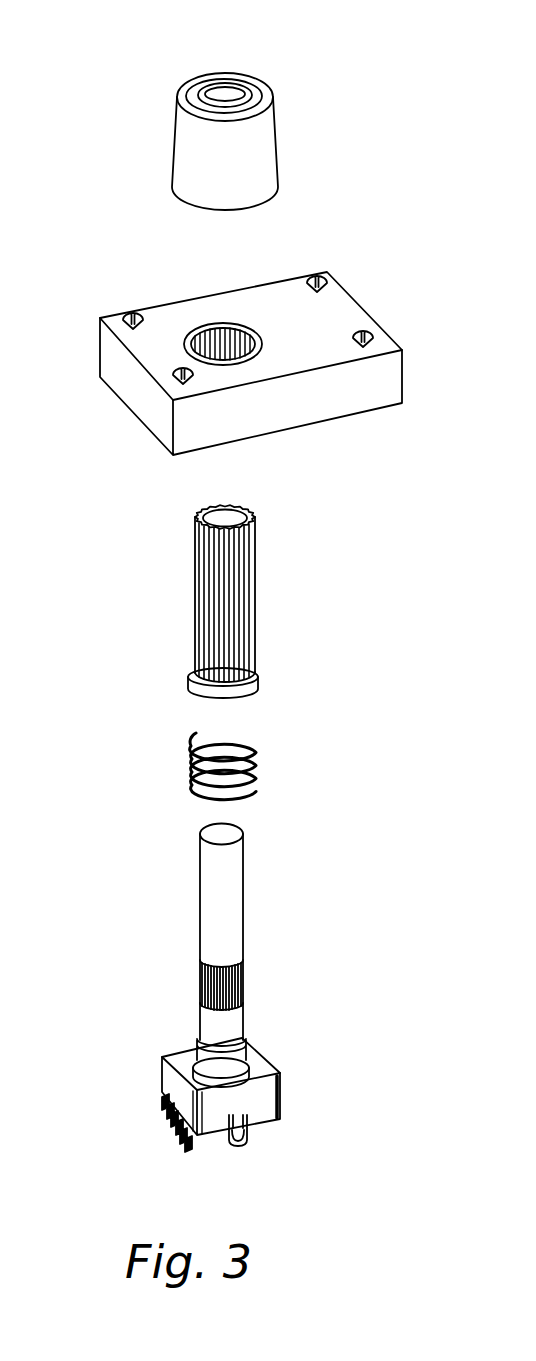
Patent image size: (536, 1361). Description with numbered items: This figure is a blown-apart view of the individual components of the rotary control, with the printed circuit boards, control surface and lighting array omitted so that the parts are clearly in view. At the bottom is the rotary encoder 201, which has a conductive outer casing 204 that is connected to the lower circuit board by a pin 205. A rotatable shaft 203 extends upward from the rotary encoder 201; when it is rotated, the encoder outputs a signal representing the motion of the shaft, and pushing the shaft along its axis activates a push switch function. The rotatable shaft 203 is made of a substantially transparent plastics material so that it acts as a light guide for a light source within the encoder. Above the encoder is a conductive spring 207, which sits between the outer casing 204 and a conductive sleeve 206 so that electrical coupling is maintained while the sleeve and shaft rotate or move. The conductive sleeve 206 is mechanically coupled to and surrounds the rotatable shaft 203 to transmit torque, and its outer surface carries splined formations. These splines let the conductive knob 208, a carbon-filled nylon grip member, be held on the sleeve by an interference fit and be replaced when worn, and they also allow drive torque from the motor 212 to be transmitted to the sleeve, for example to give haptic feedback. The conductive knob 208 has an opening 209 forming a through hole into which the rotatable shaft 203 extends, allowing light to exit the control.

The rotary encoder 201 is at (156, 920).
The rotatable shaft 203 is at (243, 900).
The outer casing 204 is at (263, 1069).
The pin 205 is at (249, 1137).
The conductive sleeve 206 is at (253, 628).
The conductive spring 207 is at (255, 773).
The conductive knob 208 is at (243, 113).
The opening 209 is at (225, 92).
The motor 212 is at (385, 342).